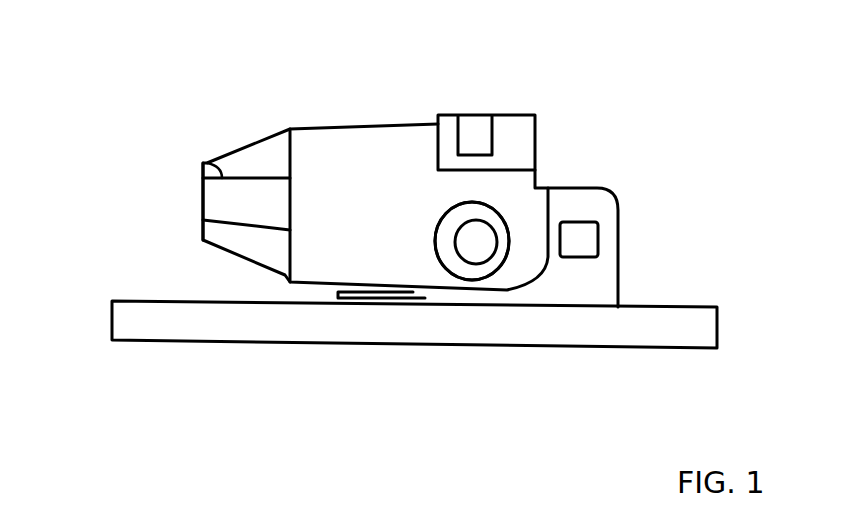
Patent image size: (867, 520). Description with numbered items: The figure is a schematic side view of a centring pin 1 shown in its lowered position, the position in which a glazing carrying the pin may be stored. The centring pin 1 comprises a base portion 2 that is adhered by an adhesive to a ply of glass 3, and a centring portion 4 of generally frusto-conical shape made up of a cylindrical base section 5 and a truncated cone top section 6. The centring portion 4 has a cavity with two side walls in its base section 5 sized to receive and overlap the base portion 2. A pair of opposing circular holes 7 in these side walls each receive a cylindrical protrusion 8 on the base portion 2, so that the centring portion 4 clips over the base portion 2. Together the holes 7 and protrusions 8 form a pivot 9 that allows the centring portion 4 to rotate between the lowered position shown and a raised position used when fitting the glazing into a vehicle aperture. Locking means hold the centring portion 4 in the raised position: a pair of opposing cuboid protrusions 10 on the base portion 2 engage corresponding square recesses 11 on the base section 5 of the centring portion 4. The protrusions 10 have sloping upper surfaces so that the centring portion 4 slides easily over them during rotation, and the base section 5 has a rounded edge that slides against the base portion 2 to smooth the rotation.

The centring pin 1 is at (596, 58).
The base portion 2 is at (608, 273).
The ply of glass 3 is at (705, 330).
The centring portion 4 is at (343, 108).
The cylindrical base section 5 is at (363, 128).
The truncated cone top section 6 is at (203, 163).
The circular holes 7 is at (489, 275).
The cylindrical protrusion 8 is at (462, 258).
The pivot 9 is at (510, 198).
The cuboid protrusions 10 is at (590, 237).
The square recesses 11 is at (472, 117).